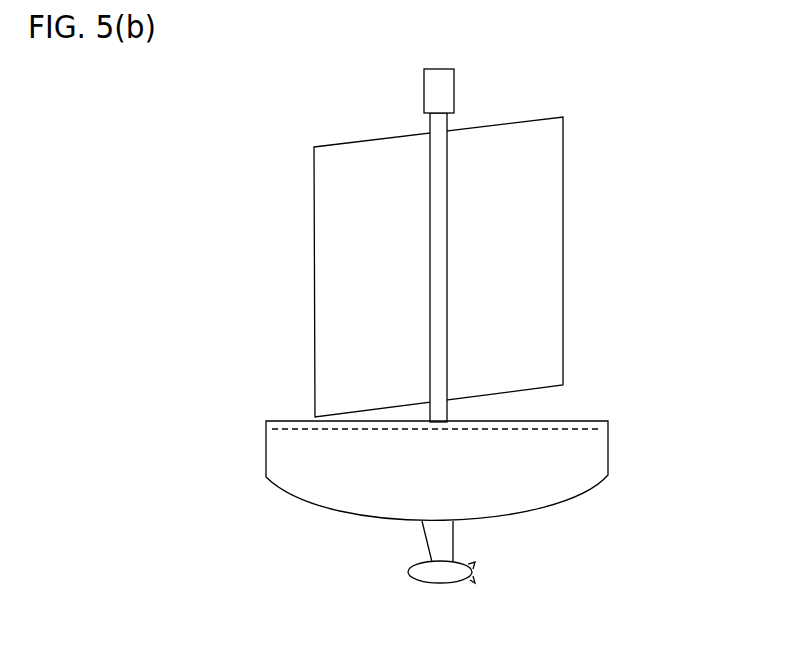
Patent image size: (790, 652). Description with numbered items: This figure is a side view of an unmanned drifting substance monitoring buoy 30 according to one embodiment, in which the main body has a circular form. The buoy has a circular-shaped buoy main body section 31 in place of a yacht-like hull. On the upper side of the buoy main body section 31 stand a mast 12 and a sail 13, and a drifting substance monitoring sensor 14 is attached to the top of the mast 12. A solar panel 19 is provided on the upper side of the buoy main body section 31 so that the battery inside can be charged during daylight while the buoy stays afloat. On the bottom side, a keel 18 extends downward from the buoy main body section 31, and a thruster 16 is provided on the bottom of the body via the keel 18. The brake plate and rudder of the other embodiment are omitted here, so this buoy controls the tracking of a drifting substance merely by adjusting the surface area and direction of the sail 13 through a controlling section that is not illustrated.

The unmanned drifting substance monitoring buoy 30 is at (664, 227).
The mast 12 is at (447, 192).
The sail 13 is at (563, 208).
The drifting substance monitoring sensor 14 is at (455, 92).
The thruster 16 is at (420, 582).
The keel 18 is at (454, 540).
The solar panel 19 is at (593, 418).
The buoy main body section 31 is at (608, 458).